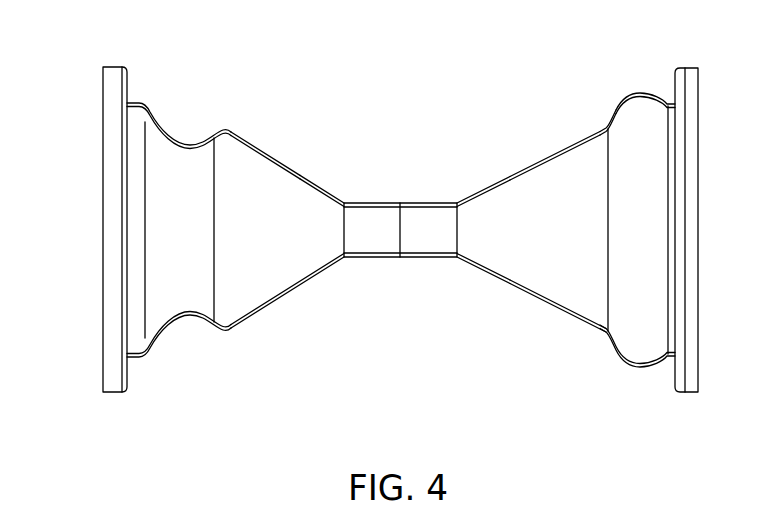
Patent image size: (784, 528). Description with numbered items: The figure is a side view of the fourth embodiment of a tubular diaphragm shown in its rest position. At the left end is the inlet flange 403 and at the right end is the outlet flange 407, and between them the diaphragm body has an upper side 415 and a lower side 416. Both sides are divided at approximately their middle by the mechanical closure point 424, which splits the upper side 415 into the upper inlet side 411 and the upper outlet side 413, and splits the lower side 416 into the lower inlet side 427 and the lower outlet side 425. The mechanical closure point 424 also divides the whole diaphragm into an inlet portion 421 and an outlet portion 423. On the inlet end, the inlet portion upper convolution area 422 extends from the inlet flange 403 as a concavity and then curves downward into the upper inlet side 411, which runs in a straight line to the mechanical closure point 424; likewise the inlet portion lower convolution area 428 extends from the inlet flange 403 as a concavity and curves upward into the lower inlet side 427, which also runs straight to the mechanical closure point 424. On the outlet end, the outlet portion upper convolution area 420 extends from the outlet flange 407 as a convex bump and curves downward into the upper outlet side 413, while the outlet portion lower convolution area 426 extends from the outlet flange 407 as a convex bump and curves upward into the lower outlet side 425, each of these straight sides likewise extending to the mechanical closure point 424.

The inlet flange 403 is at (110, 133).
The outlet flange 407 is at (687, 340).
The upper inlet side 411 is at (262, 145).
The upper outlet side 413 is at (608, 127).
The upper side 415 is at (555, 152).
The lower side 416 is at (488, 276).
The outlet portion upper convolution area 420 is at (640, 93).
The inlet portion 421 is at (315, 180).
The inlet portion upper convolution area 422 is at (178, 142).
The outlet portion 423 is at (505, 178).
The mechanical closure point 424 is at (400, 205).
The lower outlet side 425 is at (538, 300).
The outlet portion lower convolution area 426 is at (635, 367).
The lower inlet side 427 is at (270, 308).
The inlet portion lower convolution area 428 is at (178, 315).